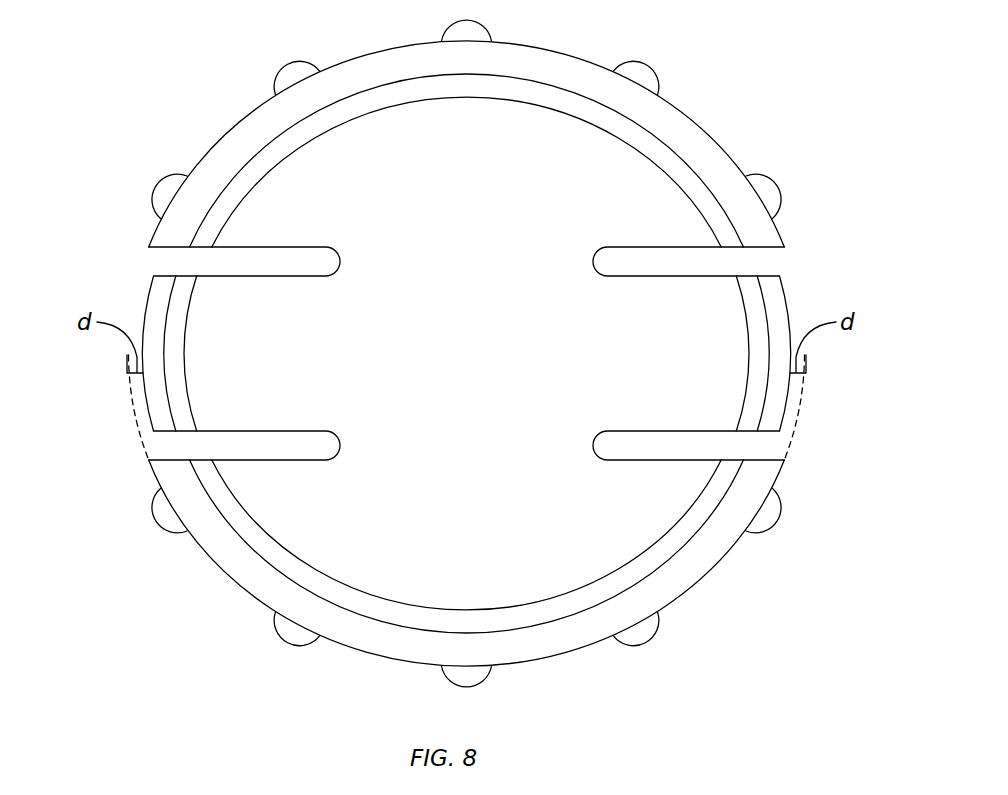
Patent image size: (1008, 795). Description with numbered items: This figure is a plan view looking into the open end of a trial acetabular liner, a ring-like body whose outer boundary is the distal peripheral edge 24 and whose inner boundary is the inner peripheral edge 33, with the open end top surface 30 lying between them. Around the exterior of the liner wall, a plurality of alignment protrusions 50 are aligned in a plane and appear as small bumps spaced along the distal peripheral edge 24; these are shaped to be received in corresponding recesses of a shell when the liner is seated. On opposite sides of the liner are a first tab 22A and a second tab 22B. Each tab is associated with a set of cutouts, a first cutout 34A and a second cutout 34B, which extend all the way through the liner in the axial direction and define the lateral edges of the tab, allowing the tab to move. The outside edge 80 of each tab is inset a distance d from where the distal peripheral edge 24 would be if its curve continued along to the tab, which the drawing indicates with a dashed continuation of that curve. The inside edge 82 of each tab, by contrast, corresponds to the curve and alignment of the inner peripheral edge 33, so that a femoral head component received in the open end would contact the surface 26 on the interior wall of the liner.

The distal peripheral edge 24 is at (698, 585).
The surface on the interior wall 26 is at (298, 505).
The open end top surface 30 is at (680, 141).
The inner peripheral edge 33 is at (547, 82).
The alignment protrusions 50 is at (647, 63).
The first cutout 34A is at (203, 265).
The second cutout 34B is at (730, 265).
The outside edge of the tab 80 is at (152, 287).
The inside edge of the tab 82 is at (168, 392).
The second tab 22B is at (145, 333).
The first tab 22A is at (788, 333).